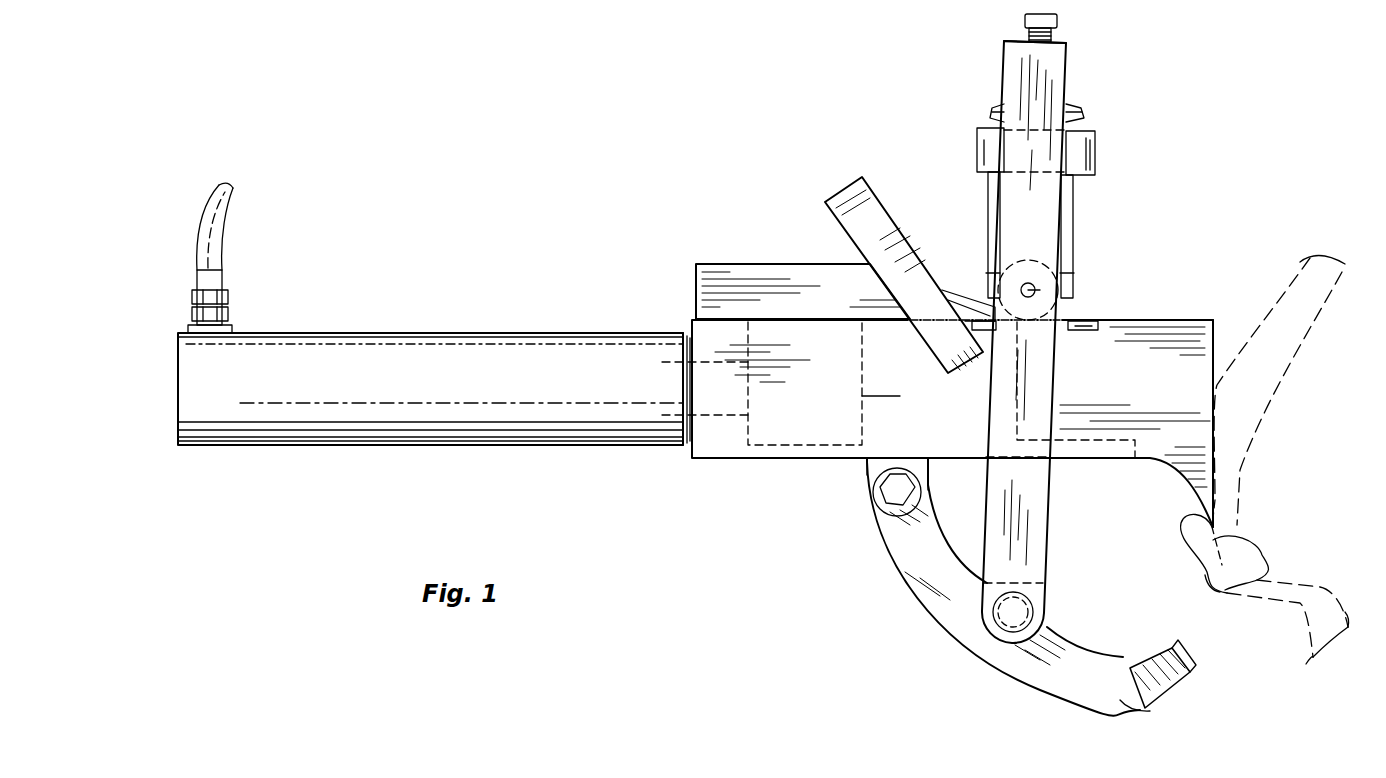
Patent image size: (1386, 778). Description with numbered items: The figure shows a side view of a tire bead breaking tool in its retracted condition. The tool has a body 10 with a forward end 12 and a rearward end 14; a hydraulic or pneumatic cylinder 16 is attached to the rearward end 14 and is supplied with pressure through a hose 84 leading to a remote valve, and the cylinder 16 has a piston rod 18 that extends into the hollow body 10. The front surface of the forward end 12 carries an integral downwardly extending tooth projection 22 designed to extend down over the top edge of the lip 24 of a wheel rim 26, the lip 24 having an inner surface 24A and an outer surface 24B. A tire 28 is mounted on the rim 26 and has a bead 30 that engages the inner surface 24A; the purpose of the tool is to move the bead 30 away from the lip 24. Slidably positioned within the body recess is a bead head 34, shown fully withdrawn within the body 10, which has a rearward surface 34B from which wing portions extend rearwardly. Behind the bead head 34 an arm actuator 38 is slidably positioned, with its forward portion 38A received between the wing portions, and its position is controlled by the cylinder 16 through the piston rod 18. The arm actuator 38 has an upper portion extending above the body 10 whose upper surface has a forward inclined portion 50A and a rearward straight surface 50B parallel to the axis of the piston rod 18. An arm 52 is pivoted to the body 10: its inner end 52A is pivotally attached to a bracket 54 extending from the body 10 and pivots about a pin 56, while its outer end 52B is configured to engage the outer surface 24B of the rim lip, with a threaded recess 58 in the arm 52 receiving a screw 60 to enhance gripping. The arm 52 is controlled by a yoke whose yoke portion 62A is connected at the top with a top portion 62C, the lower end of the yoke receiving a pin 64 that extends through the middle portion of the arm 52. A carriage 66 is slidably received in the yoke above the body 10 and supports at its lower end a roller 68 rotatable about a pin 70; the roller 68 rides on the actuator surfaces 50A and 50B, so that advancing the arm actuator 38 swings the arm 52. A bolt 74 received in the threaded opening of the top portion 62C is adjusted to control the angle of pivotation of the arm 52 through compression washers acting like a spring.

The body 10 is at (795, 458).
The forward end 12 is at (1216, 332).
The rearward end 14 is at (690, 318).
The hydraulic or pneumatic cylinder 16 is at (448, 370).
The piston rod 18 is at (718, 412).
The tooth projection 22 is at (1215, 495).
The lip 24 is at (1183, 520).
The inner surface 24A is at (1233, 545).
The outer surface 24B is at (1245, 597).
The wheel rim 26 is at (1207, 585).
The tire 28 is at (1283, 290).
The bead 30 is at (1276, 560).
The bead head 34 is at (1120, 372).
The rearward surface 34B is at (1018, 420).
The arm actuator 38 is at (780, 416).
The piston end 38A is at (864, 396).
The forward inclined portion 50A is at (950, 290).
The rearward straight surface 50B is at (765, 264).
The arm 52 is at (1050, 672).
The inner end 52A is at (872, 520).
The outer end 52B is at (1182, 696).
The bracket 54 is at (868, 467).
The pin 56 is at (900, 492).
The serrated pad 58 is at (1157, 665).
The screw 60 is at (1190, 656).
The yoke portion 62A is at (1040, 506).
The top portion 62C is at (1068, 46).
The pin 64 is at (1017, 612).
The carriage 66 is at (1075, 208).
The roller 68 is at (1042, 282).
The pin 70 is at (1036, 290).
The bolt 74 is at (1025, 21).
The hose 84 is at (228, 243).